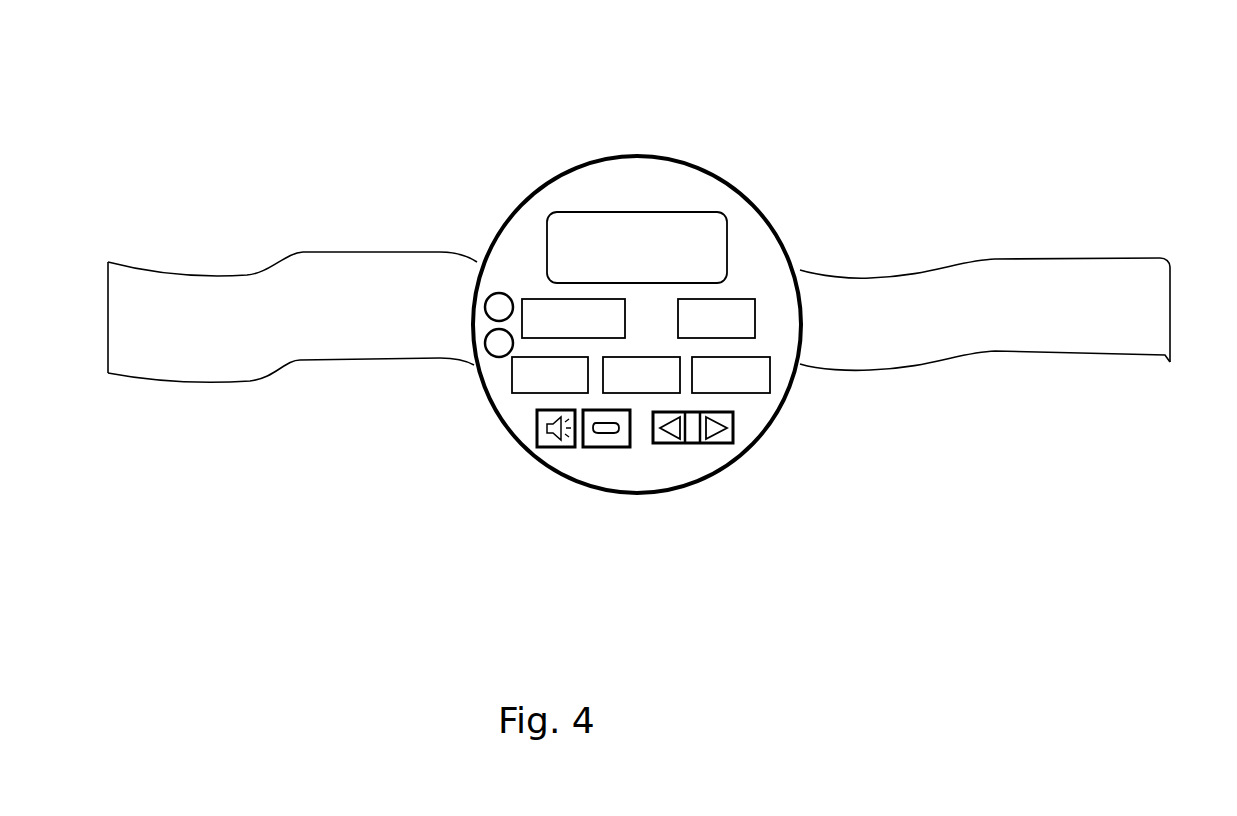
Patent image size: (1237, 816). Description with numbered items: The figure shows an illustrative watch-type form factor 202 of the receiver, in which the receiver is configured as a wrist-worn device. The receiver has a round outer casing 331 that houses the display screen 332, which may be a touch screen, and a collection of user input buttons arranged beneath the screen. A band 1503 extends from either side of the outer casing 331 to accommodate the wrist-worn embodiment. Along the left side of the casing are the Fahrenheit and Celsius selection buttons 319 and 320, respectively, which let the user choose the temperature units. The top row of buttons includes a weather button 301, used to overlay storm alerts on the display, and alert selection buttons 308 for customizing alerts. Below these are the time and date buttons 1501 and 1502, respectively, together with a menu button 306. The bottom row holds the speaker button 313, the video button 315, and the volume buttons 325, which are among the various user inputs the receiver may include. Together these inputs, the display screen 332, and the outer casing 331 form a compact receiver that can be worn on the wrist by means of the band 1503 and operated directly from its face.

The form factor 202 is at (282, 56).
The band 1503 is at (253, 270).
The outer casing 331 is at (555, 175).
The display screen 332 is at (647, 208).
The Fahrenheit selection button 319 is at (488, 290).
The Celsius selection button 320 is at (490, 357).
The weather button 301 is at (540, 300).
The alert selection buttons 308 is at (757, 300).
The time button 1501 is at (512, 395).
The date button 1502 is at (637, 395).
The menu button 306 is at (730, 393).
The speaker button 313 is at (543, 445).
The video button 315 is at (602, 447).
The volume buttons 325 is at (722, 443).